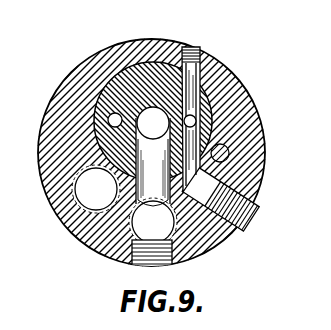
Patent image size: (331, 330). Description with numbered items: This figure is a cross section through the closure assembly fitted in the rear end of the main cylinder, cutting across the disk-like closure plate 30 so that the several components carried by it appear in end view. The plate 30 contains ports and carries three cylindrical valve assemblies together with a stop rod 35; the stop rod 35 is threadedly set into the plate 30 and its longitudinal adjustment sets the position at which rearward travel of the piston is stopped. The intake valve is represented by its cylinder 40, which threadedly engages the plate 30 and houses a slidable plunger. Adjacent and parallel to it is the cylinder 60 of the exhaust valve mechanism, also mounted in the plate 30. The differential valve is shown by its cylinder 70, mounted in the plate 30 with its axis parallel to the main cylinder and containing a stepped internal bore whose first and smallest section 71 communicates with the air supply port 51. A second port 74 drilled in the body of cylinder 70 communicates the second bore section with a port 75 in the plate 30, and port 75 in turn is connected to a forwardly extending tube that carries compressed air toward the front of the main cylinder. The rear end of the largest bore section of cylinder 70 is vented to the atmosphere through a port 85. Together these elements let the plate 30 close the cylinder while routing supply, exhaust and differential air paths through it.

The closure plate 30 is at (257, 128).
The cylinder 70 is at (147, 62).
The port 85 is at (112, 113).
The cylinder 60 is at (93, 200).
The port 75 is at (246, 206).
The port 74 is at (193, 76).
The cylinder 40 is at (143, 229).
The first bore section 71 is at (155, 112).
The stop rod 35 is at (234, 152).
The air supply port 51 is at (157, 168).